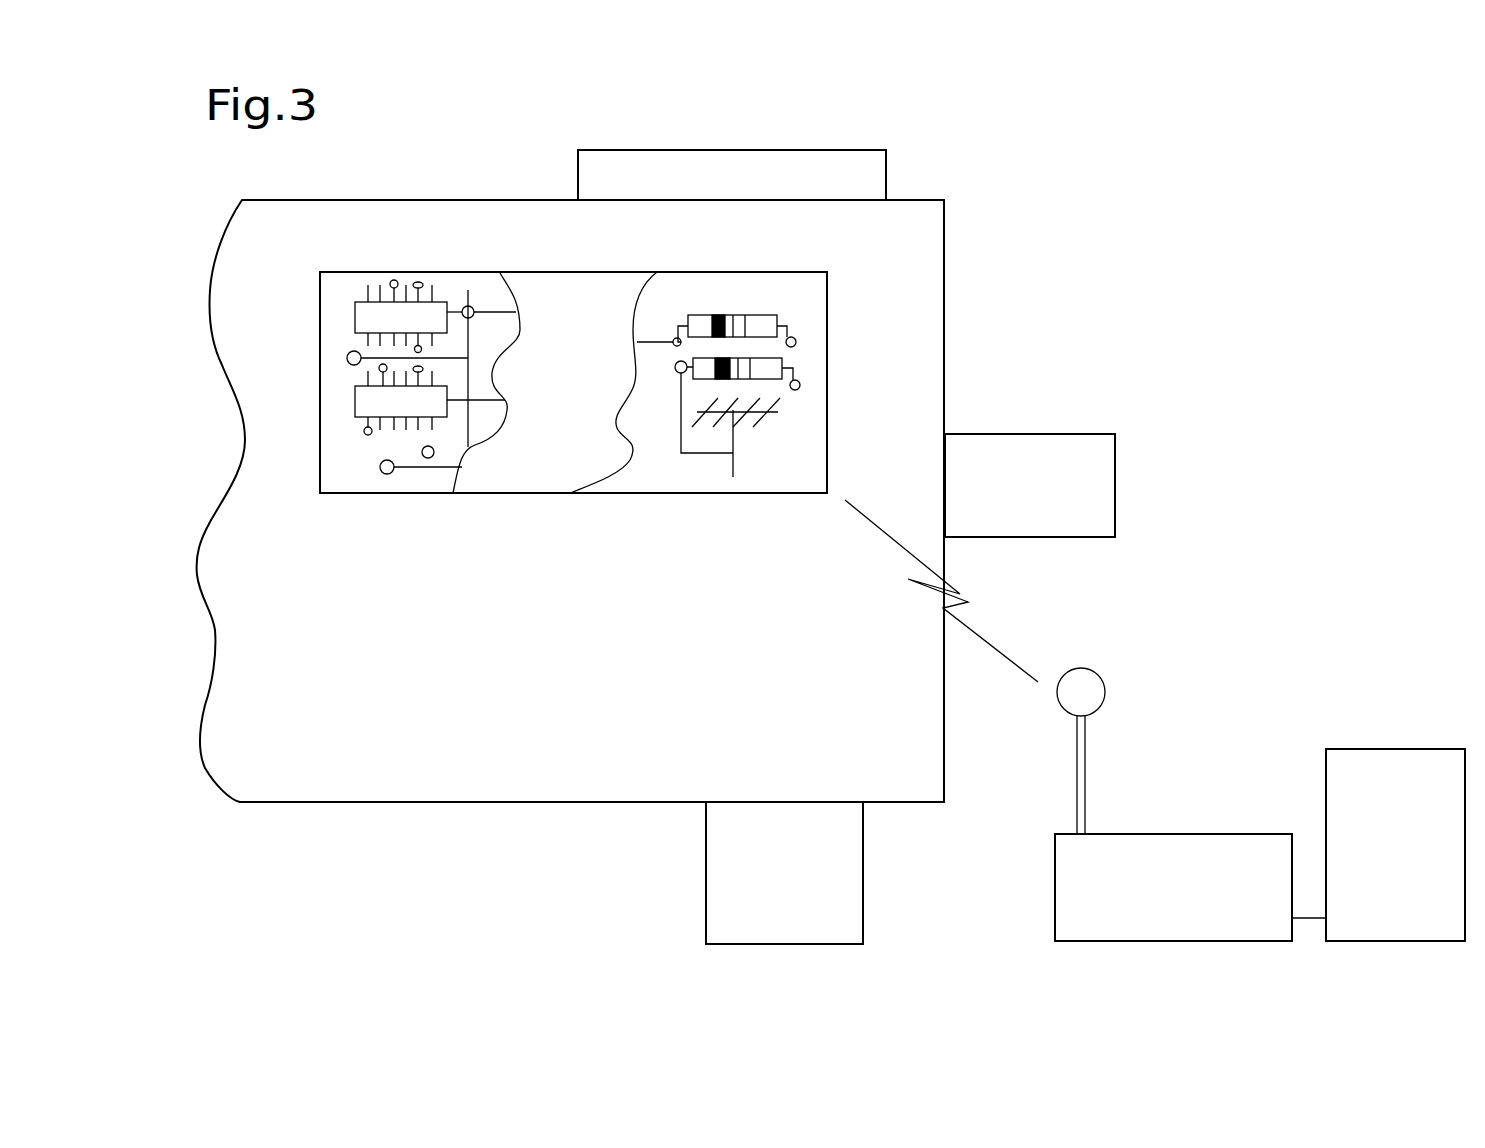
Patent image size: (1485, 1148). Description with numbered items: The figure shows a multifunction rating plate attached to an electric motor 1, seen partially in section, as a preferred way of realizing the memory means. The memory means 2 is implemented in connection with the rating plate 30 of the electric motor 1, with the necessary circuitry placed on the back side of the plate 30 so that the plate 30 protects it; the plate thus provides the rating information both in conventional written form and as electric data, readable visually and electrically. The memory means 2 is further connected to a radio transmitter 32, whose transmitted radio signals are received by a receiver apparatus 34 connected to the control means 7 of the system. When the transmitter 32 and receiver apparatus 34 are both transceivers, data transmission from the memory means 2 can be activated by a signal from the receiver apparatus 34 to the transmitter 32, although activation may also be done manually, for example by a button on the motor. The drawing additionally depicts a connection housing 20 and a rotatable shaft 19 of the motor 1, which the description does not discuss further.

The electric motor 1 is at (928, 276).
The connection housing 20 is at (886, 155).
The rotatable shaft 19 is at (1089, 441).
The memory means 2 is at (402, 462).
The rating plate 30 is at (507, 483).
The radio transmitter 32 is at (653, 460).
The receiver apparatus 34 is at (1185, 838).
The control means 7 is at (1368, 748).